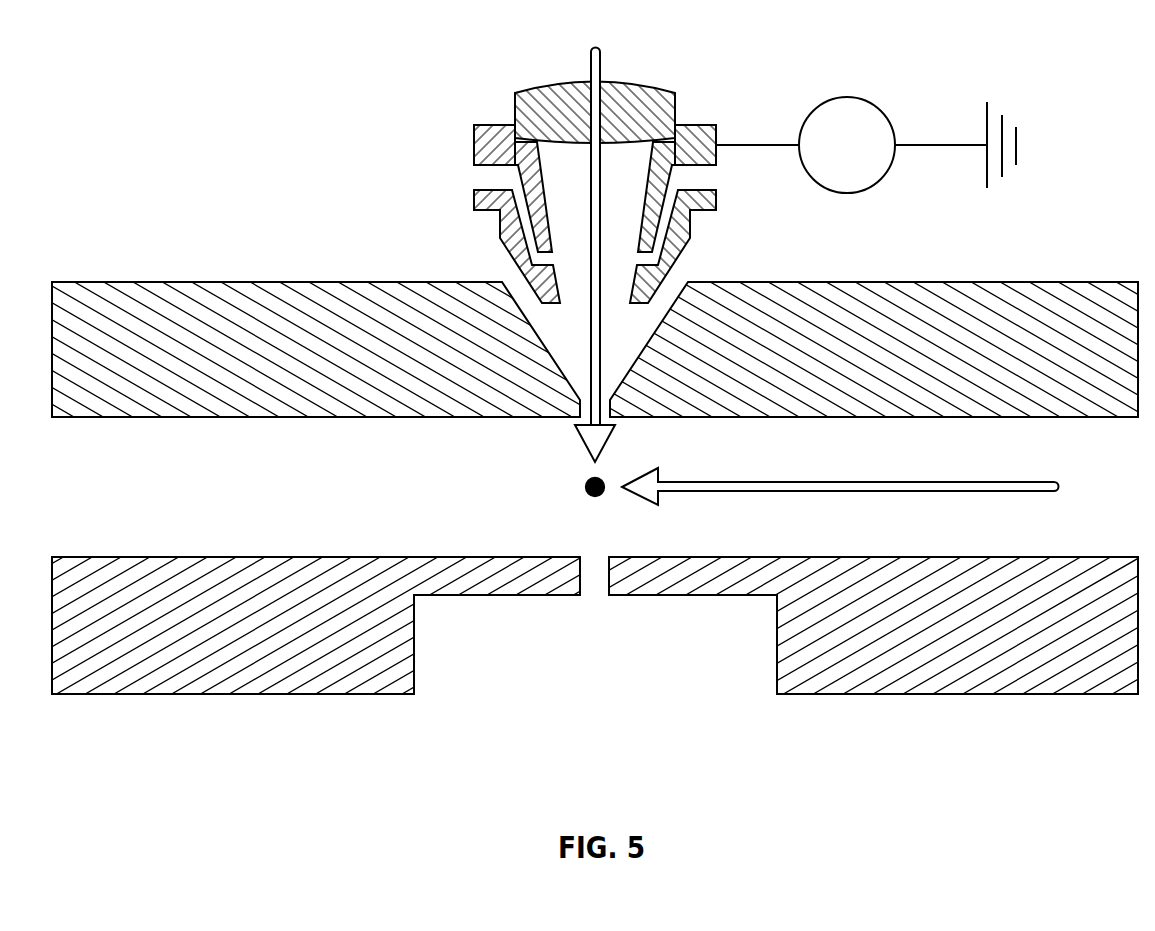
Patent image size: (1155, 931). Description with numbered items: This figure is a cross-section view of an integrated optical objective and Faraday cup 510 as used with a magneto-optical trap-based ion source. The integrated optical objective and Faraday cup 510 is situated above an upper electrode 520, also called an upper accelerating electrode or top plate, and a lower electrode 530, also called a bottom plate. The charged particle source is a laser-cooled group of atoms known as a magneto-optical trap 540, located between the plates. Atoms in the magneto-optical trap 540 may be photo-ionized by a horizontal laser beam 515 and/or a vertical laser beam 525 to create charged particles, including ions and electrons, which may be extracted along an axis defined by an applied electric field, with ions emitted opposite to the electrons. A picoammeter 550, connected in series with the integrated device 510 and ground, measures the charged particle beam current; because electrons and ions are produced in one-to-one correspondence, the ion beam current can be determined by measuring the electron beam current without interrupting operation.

The integrated optical objective and Faraday cup 510 is at (690, 96).
The horizontal laser beam 515 is at (903, 482).
The upper electrode 520 is at (926, 273).
The vertical laser beam 525 is at (590, 68).
The lower electrode 530 is at (934, 710).
The magneto-optical trap 540 is at (585, 485).
The picoammeter 550 is at (902, 110).